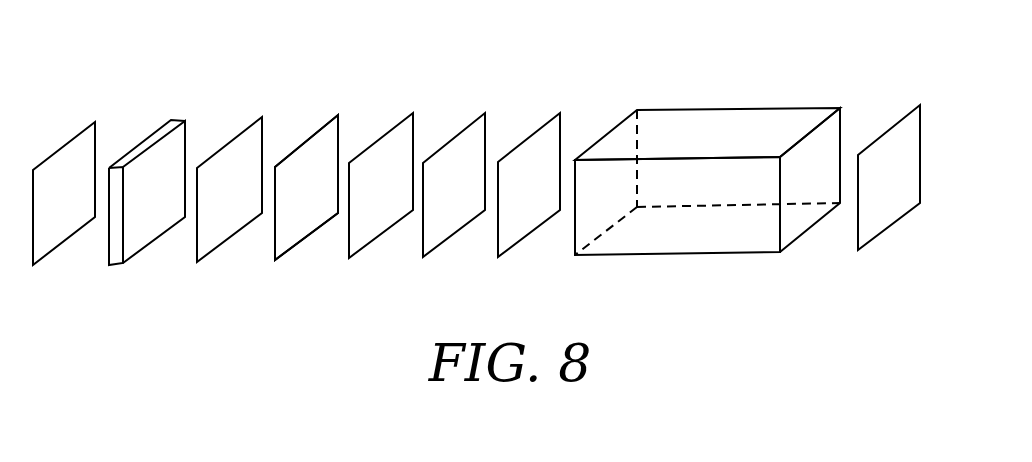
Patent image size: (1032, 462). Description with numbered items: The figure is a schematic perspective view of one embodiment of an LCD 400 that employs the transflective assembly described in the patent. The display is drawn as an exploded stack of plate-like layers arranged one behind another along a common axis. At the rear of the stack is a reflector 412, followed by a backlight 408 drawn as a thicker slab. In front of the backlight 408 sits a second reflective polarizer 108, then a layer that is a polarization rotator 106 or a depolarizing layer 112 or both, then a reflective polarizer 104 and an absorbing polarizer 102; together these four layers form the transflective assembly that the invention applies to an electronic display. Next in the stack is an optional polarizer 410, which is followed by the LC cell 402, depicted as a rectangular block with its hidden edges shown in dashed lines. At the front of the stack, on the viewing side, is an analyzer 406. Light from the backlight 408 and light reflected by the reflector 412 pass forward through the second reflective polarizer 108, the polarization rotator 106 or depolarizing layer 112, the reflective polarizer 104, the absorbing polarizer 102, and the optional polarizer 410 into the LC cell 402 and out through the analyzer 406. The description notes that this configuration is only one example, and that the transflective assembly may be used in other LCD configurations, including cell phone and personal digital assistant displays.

The LCD 400 is at (467, 74).
The LC cell 402 is at (695, 108).
The analyzer 406 is at (892, 123).
The backlight 408 is at (148, 247).
The optional polarizer 410 is at (540, 128).
The reflector 412 is at (72, 138).
The absorbing polarizer 102 is at (453, 240).
The reflective polarizer 104 is at (390, 130).
The polarization rotator 106 is at (305, 240).
The second reflective polarizer 108 is at (240, 132).
The depolarizing layer 112 is at (306, 187).